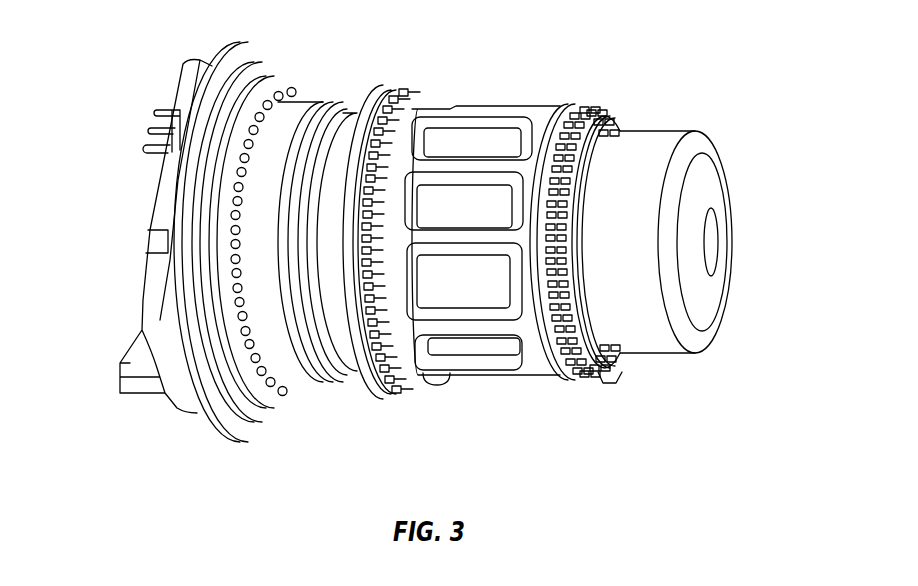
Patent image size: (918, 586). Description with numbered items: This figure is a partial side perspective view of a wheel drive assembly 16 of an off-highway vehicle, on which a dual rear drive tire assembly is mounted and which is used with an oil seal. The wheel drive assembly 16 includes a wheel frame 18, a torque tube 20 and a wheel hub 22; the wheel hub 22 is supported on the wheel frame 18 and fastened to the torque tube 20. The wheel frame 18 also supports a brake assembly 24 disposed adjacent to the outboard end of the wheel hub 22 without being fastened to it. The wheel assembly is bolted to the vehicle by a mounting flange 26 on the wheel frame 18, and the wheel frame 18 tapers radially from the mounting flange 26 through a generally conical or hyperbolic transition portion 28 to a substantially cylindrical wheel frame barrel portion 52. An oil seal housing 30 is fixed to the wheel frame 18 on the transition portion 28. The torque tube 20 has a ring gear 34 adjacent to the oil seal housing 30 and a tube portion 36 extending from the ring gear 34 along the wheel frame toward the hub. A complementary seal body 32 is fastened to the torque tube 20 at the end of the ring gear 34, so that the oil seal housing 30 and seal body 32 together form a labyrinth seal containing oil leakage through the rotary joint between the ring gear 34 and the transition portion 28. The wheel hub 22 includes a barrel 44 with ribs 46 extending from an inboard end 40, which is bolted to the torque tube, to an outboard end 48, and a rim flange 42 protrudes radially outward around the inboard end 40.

The wheel drive assembly 16 is at (641, 84).
The wheel frame 18 is at (221, 58).
The torque tube 20 is at (303, 100).
The wheel hub 22 is at (478, 107).
The brake assembly 24 is at (713, 232).
The mounting flange 26 is at (211, 430).
The transition portion 28 is at (243, 81).
The oil seal housing 30 is at (240, 404).
The seal body 32 is at (266, 388).
The ring gear 34 is at (296, 388).
The tube portion 36 is at (343, 354).
The inboard end 40 is at (421, 378).
The rim flange 42 is at (381, 396).
The barrel 44 is at (462, 346).
The ribs 46 is at (492, 316).
The outboard end 48 is at (153, 200).
The wheel frame barrel portion 52 is at (130, 363).